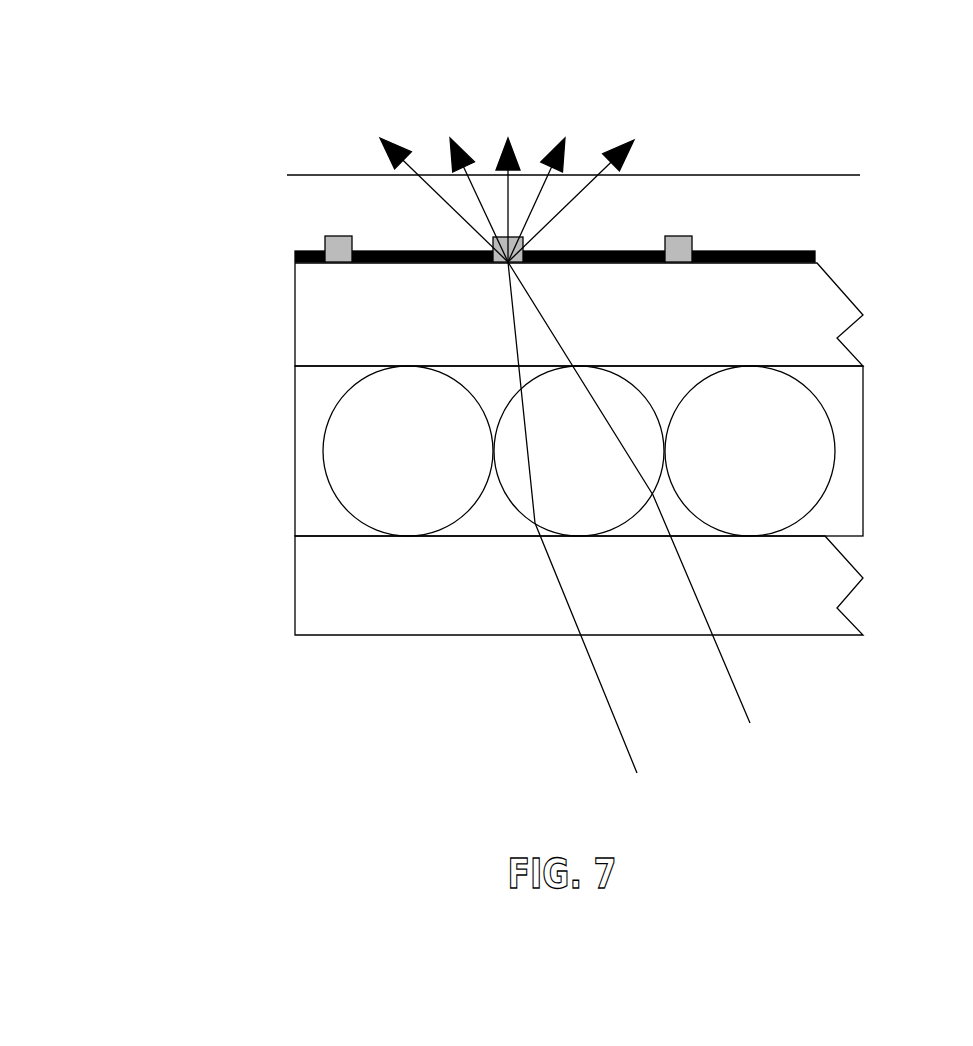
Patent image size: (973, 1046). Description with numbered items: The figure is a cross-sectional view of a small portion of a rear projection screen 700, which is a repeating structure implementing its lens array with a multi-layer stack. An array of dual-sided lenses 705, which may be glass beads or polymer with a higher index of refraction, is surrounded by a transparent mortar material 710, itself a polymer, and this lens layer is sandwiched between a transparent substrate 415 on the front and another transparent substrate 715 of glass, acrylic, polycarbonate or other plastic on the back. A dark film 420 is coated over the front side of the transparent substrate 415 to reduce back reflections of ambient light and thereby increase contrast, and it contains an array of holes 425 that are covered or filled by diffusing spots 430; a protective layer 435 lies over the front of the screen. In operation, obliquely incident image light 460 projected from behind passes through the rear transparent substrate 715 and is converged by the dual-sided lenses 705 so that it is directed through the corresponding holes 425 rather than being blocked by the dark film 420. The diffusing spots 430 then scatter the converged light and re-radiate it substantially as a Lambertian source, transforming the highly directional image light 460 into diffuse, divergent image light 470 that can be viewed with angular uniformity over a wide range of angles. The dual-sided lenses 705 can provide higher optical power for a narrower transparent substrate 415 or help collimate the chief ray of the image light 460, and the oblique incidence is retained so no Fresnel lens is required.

The rear projection screen 700 is at (268, 626).
The transparent substrate 415 is at (579, 314).
The transparent mortar material 710 is at (848, 515).
The dual-sided lenses 705 is at (579, 451).
The transparent substrate 715 is at (579, 585).
The dark film 420 is at (812, 248).
The diffusing spots 430 is at (755, 120).
The holes 425 is at (685, 284).
The protective layer 435 is at (573, 200).
The divergent image light 470 is at (638, 140).
The image light 460 is at (603, 700).